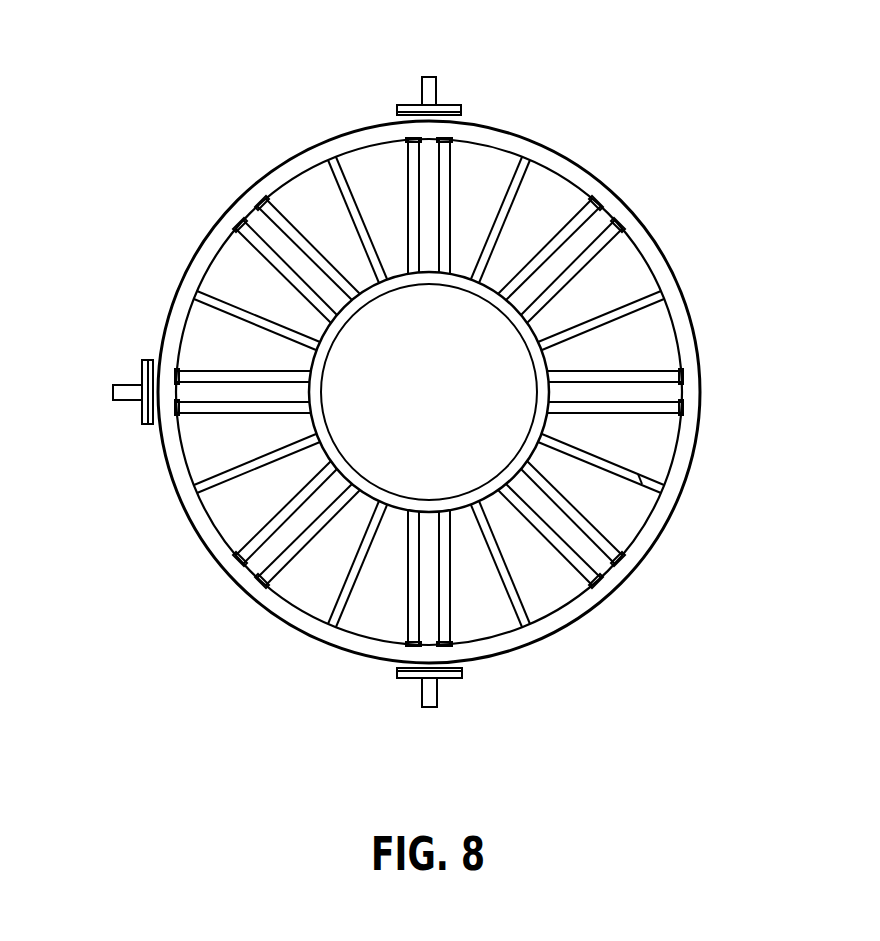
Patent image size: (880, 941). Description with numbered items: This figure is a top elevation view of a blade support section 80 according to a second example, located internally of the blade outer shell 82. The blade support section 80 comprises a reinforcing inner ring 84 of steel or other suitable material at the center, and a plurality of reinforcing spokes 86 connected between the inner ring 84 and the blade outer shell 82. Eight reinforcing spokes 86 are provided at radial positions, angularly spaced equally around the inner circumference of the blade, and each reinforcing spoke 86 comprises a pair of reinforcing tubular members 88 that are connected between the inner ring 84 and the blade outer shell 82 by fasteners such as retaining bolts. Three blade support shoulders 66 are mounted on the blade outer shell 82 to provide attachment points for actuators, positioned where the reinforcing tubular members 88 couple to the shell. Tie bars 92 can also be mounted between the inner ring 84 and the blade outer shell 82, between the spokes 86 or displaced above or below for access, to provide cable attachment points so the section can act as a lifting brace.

The blade support section 80 is at (552, 192).
The blade outer shell 82 is at (536, 143).
The reinforcing inner ring 84 is at (397, 278).
The reinforcing spokes 86 is at (276, 218).
The reinforcing tubular members 88 is at (278, 215).
The tie bars 92 is at (633, 478).
The blade support shoulders 66 is at (457, 104).